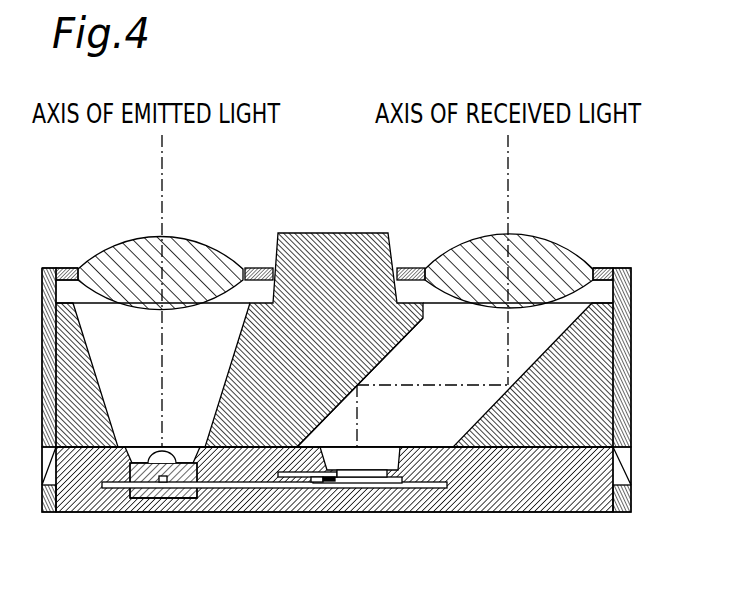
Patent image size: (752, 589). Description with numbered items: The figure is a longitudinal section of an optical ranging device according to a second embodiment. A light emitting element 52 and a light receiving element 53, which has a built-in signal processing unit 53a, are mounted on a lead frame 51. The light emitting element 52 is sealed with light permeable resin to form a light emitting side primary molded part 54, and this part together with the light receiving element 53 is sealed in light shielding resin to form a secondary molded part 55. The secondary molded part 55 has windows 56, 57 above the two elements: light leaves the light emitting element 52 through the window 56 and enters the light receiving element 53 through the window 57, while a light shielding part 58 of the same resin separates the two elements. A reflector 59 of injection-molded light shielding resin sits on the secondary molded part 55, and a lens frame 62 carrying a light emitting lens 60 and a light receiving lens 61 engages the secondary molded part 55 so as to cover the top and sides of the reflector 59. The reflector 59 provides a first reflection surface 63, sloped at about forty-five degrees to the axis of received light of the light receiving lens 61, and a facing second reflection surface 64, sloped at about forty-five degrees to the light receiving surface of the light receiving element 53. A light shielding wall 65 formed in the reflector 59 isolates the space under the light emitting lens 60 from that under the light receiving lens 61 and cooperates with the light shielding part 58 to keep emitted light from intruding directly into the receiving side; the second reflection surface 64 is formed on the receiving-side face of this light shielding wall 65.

The lead frame 51 is at (443, 488).
The light emitting element 52 is at (155, 498).
The light receiving element 53 is at (318, 482).
The signal processing unit 53a is at (334, 481).
The light emitting side primary molded part 54 is at (182, 498).
The secondary molded part 55 is at (566, 512).
The window 56 is at (148, 460).
The window 57 is at (357, 457).
The light shielding part 58 is at (252, 467).
The reflector 59 is at (272, 208).
The light emitting lens 60 is at (118, 243).
The light receiving lens 61 is at (543, 243).
The lens frame 62 is at (631, 280).
The first reflection surface 63 is at (518, 368).
The second reflection surface 64 is at (385, 357).
The light shielding wall 65 is at (350, 243).